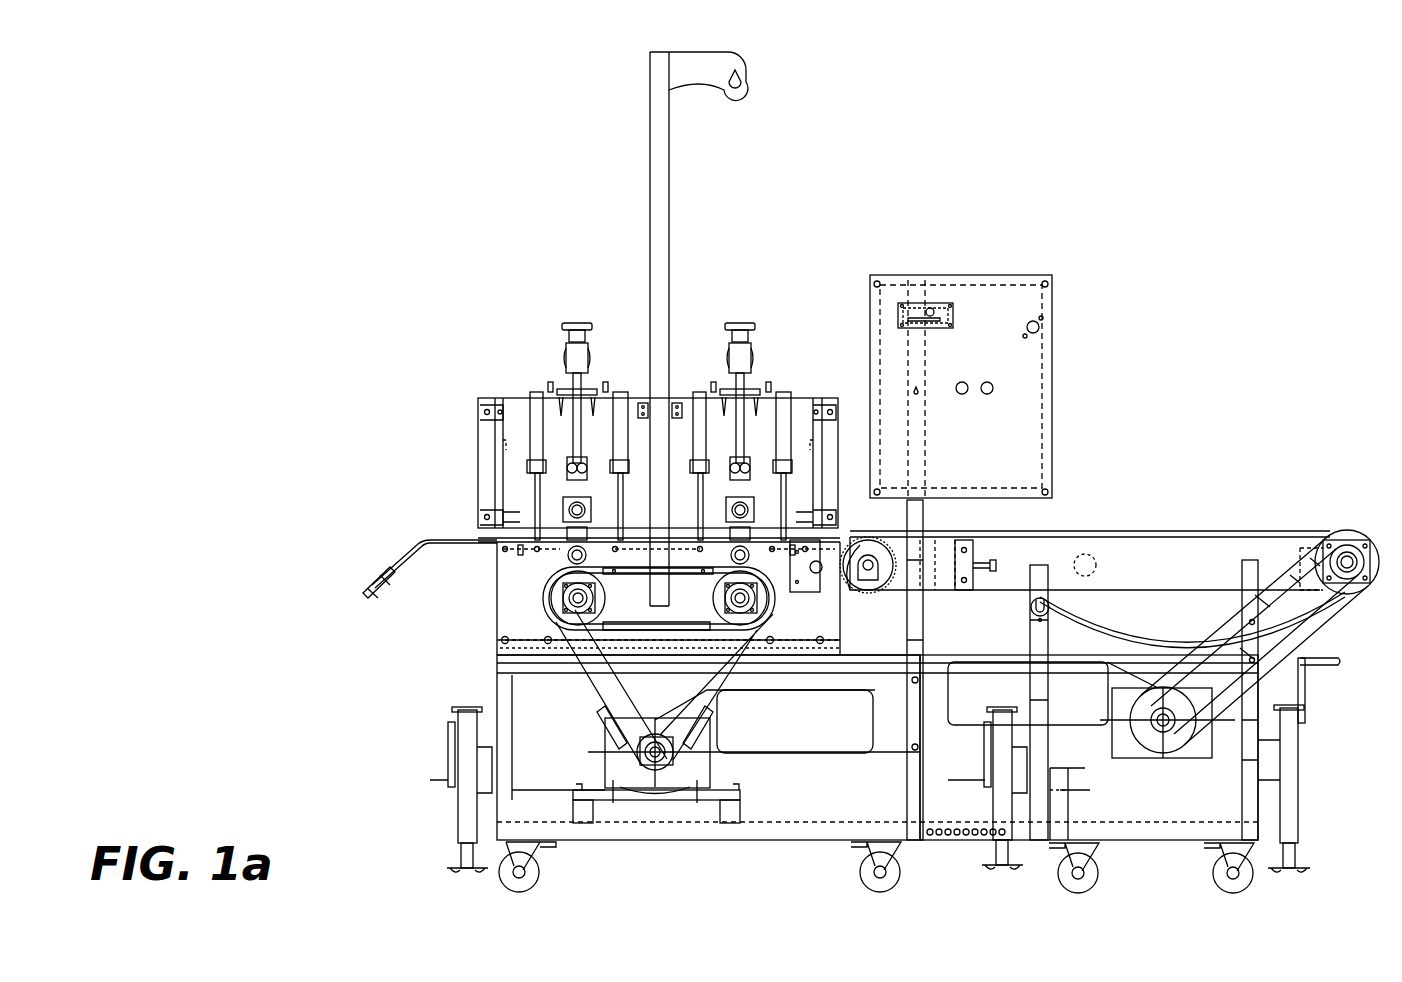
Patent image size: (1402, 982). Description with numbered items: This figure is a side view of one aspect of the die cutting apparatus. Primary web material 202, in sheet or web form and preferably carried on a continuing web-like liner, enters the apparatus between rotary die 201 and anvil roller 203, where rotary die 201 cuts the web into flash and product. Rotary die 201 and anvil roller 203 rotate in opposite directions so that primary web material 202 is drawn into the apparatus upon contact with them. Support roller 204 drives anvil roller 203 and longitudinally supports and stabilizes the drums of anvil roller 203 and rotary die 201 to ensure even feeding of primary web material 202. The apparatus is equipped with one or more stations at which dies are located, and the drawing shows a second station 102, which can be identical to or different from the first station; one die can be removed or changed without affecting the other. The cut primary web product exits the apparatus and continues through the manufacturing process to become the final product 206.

The second station 102 is at (740, 322).
The rotary die 201 is at (560, 495).
The primary web material 202 is at (420, 541).
The anvil roller 203 is at (555, 556).
The support roller 204 is at (555, 596).
The final product 206 is at (1196, 532).